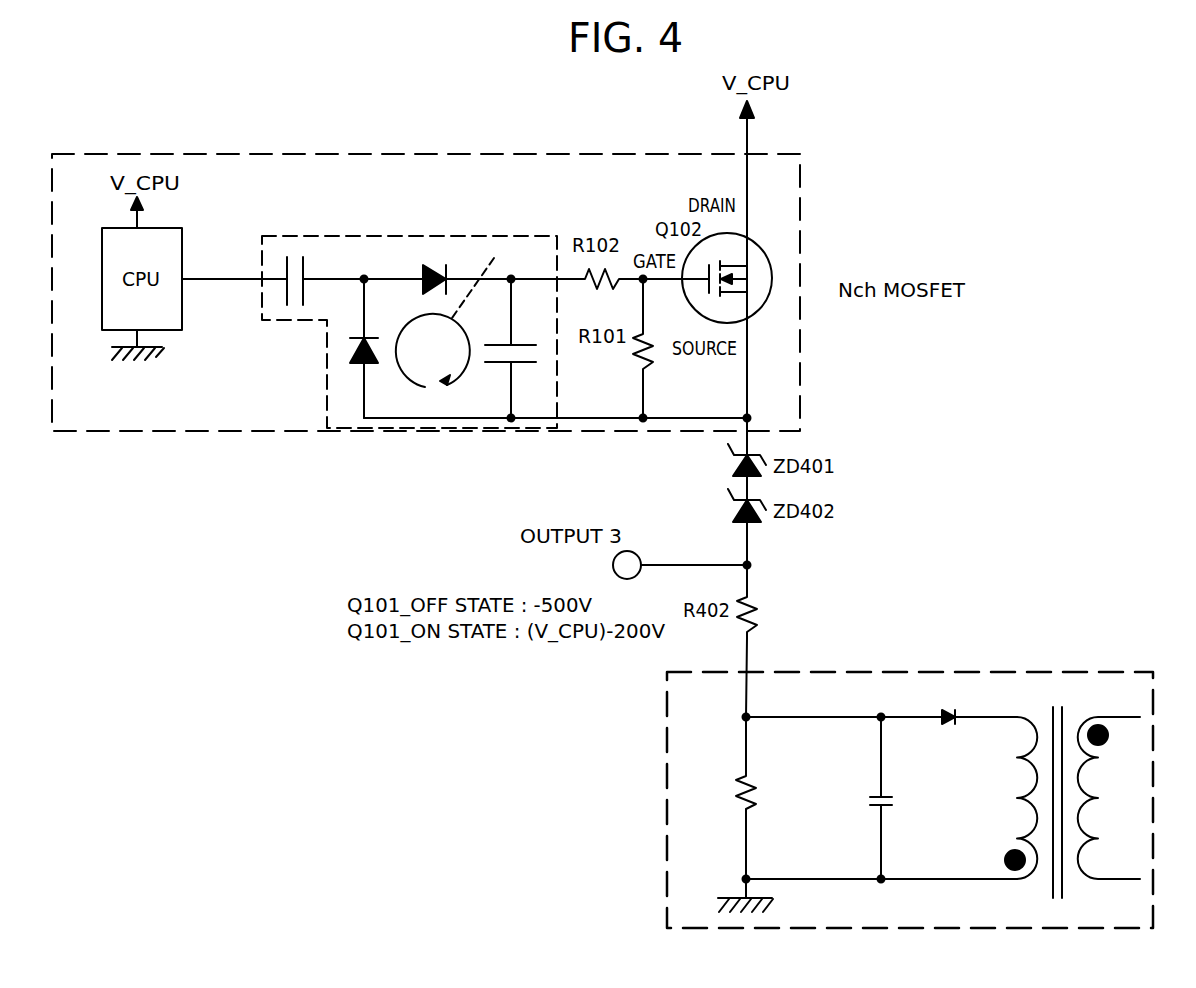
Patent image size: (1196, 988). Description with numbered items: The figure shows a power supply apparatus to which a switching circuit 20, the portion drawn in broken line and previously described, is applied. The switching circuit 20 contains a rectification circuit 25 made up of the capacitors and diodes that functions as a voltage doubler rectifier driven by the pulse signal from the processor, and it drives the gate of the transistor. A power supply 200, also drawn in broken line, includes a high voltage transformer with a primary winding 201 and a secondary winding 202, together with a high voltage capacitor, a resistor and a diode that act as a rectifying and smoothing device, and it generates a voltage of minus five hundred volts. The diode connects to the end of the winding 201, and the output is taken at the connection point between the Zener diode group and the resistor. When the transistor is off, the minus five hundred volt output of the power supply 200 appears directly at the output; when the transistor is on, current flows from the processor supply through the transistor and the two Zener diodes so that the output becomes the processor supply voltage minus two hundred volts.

The switching circuit 20 is at (277, 432).
The rectification circuit 25 is at (370, 235).
The power supply 200 is at (873, 668).
The primary winding 201 is at (1127, 713).
The secondary winding 202 is at (1017, 713).